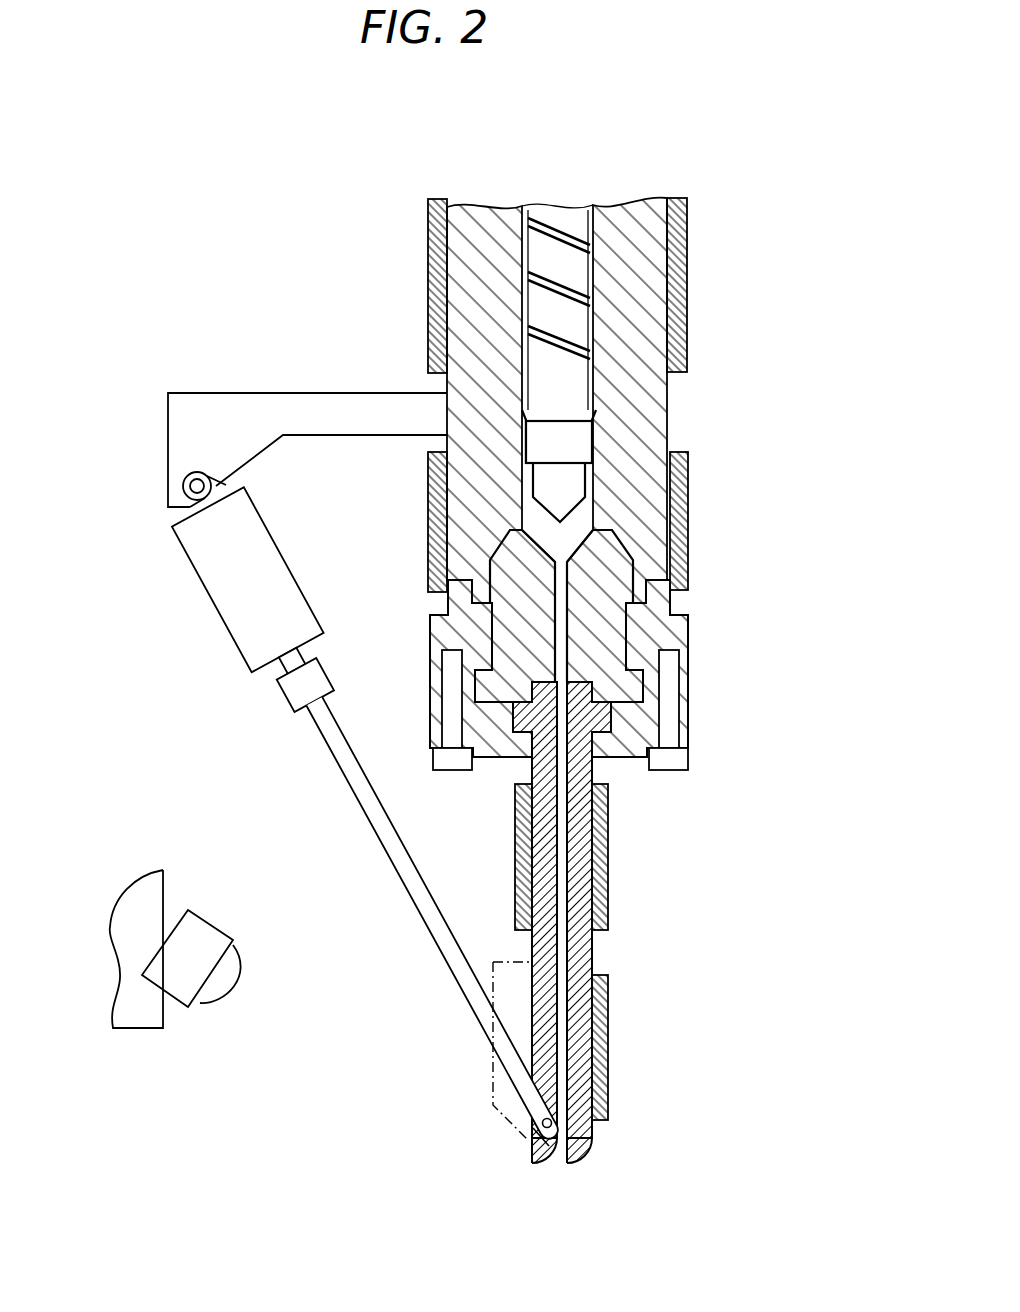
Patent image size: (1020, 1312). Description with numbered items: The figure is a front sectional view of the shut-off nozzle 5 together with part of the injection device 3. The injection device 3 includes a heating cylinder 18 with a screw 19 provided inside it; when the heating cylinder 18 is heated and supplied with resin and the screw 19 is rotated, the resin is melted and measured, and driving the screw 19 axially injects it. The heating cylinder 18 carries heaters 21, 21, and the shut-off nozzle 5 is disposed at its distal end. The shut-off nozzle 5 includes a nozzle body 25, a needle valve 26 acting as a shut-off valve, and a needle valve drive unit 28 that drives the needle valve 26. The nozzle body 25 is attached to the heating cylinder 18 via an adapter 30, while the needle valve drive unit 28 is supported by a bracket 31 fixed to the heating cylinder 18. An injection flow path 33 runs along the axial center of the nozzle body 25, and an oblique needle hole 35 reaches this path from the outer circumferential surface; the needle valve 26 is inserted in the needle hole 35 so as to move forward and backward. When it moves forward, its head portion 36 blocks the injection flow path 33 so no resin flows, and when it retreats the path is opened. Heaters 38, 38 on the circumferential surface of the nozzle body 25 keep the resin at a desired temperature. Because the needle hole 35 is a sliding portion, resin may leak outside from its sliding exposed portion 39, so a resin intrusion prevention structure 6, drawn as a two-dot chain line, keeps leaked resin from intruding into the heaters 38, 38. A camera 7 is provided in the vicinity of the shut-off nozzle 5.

The injection device 3 is at (752, 180).
The shut-off nozzle 5 is at (122, 574).
The resin intrusion prevention structure 6 is at (493, 1081).
The camera 7 is at (160, 957).
The heating cylinder 18 is at (667, 391).
The screw 19 is at (583, 284).
The heaters 21 is at (428, 288).
The nozzle body 25 is at (593, 946).
The needle valve 26 is at (455, 965).
The needle valve drive unit 28 is at (236, 645).
The adapter 30 is at (690, 716).
The bracket 31 is at (240, 393).
The injection flow path 33 is at (582, 884).
The needle hole 35 is at (537, 1145).
The head portion 36 is at (570, 1153).
The heaters 38 is at (608, 839).
The sliding exposed portion 39 is at (530, 1125).